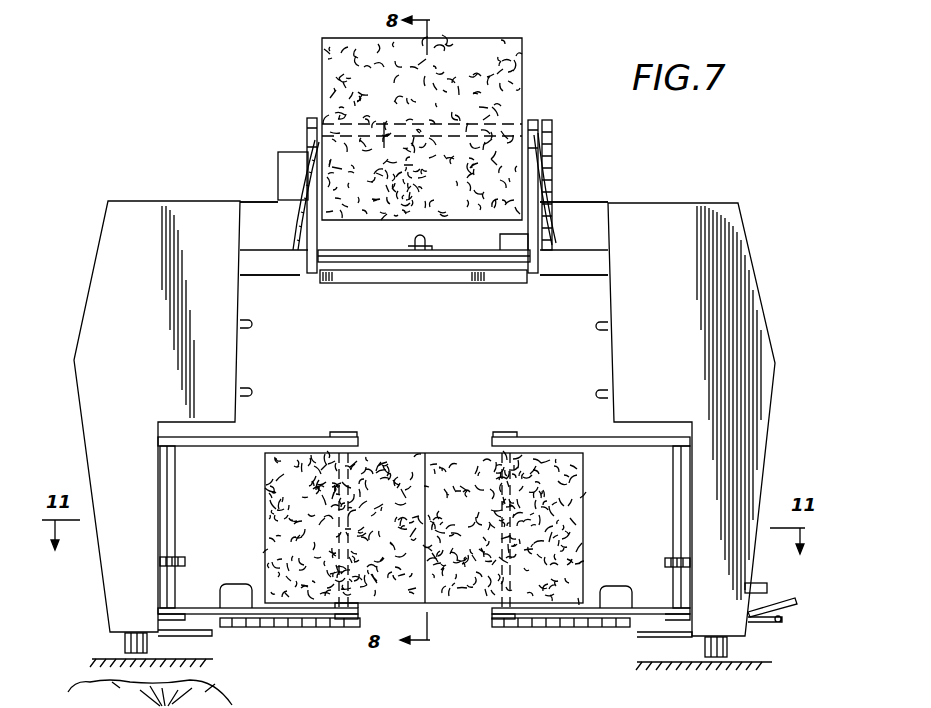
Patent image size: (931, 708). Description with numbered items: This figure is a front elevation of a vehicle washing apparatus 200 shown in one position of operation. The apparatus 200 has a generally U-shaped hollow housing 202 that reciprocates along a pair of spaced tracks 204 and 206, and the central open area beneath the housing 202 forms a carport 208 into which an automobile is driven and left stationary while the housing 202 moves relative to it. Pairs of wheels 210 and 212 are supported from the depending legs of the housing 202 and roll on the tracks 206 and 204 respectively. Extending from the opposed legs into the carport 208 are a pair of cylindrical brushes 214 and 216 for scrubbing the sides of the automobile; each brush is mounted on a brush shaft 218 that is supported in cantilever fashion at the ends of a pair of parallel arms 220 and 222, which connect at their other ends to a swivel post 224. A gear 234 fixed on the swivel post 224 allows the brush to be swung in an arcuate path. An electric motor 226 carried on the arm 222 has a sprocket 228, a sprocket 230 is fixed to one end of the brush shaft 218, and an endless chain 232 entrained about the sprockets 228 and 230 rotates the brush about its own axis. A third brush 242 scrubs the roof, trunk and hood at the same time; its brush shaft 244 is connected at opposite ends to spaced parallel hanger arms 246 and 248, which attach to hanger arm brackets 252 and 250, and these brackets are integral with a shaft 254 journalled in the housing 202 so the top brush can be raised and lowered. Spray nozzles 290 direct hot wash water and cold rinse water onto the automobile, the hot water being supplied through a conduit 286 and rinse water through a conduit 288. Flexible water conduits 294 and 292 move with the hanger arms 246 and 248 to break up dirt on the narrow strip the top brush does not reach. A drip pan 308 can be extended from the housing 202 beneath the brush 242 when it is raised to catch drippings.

The vehicle washing apparatus 200 is at (642, 182).
The housing 202 is at (737, 245).
The track 204 is at (722, 660).
The track 206 is at (182, 654).
The carport 208 is at (425, 487).
The wheels 210 is at (124, 641).
The wheels 212 is at (703, 646).
The cylindrical brush 214 is at (385, 456).
The cylindrical brush 216 is at (465, 600).
The brush shaft 218 is at (352, 540).
The arm 220 is at (286, 437).
The arm 222 is at (298, 628).
The swivel post 224 is at (168, 478).
The electric motor 226 is at (250, 566).
The sprocket 228 is at (240, 630).
The sprocket 230 is at (345, 630).
The endless chain 232 is at (310, 606).
The gear 234 is at (182, 560).
The third brush 242 is at (510, 84).
The brush shaft 244 is at (385, 145).
The hanger arm 246 is at (308, 284).
The hanger arm 248 is at (532, 282).
The hanger arm bracket 250 is at (567, 276).
The hanger arm bracket 252 is at (270, 262).
The shaft 254 is at (480, 284).
The conduit 286 is at (780, 626).
The conduit 288 is at (775, 604).
The spray nozzles 290 is at (602, 330).
The flexible water conduit 292 is at (552, 186).
The flexible water conduit 294 is at (295, 195).
The drip pan 308 is at (356, 282).